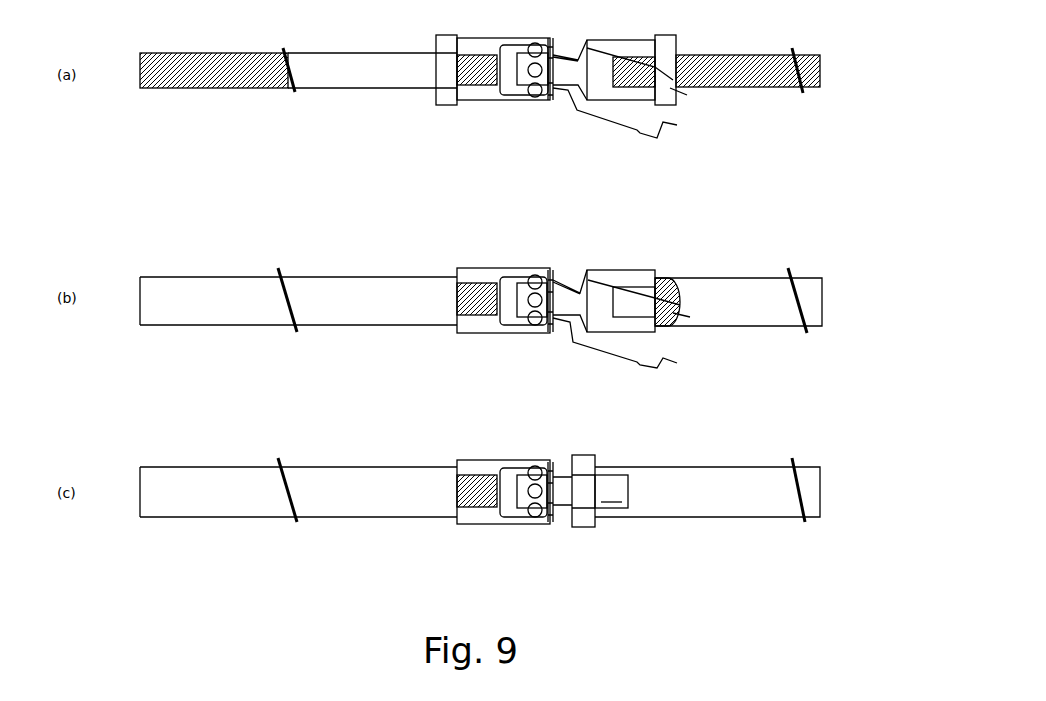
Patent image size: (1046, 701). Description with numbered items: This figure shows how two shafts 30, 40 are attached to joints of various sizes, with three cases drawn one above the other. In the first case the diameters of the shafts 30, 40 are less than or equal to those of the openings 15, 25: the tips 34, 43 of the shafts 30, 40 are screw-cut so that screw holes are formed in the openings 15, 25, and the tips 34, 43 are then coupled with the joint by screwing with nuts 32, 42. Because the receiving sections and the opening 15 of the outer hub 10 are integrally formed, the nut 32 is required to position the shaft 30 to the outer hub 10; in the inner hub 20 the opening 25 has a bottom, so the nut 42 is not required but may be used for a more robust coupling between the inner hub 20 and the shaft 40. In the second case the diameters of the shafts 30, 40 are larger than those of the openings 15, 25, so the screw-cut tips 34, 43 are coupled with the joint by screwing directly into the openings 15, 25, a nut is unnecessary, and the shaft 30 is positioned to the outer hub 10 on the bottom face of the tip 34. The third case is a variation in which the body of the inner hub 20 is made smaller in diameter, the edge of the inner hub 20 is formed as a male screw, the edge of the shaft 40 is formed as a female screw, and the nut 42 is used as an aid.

The outer hub 10 is at (484, 108).
The opening 15 is at (498, 52).
The inner hub 20 is at (614, 130).
The opening 25 is at (620, 57).
The shaft 30 is at (260, 82).
The nut 32 is at (441, 38).
The tip 34 is at (473, 55).
The shaft 40 is at (752, 88).
The nut 42 is at (666, 37).
The tip 43 is at (642, 57).